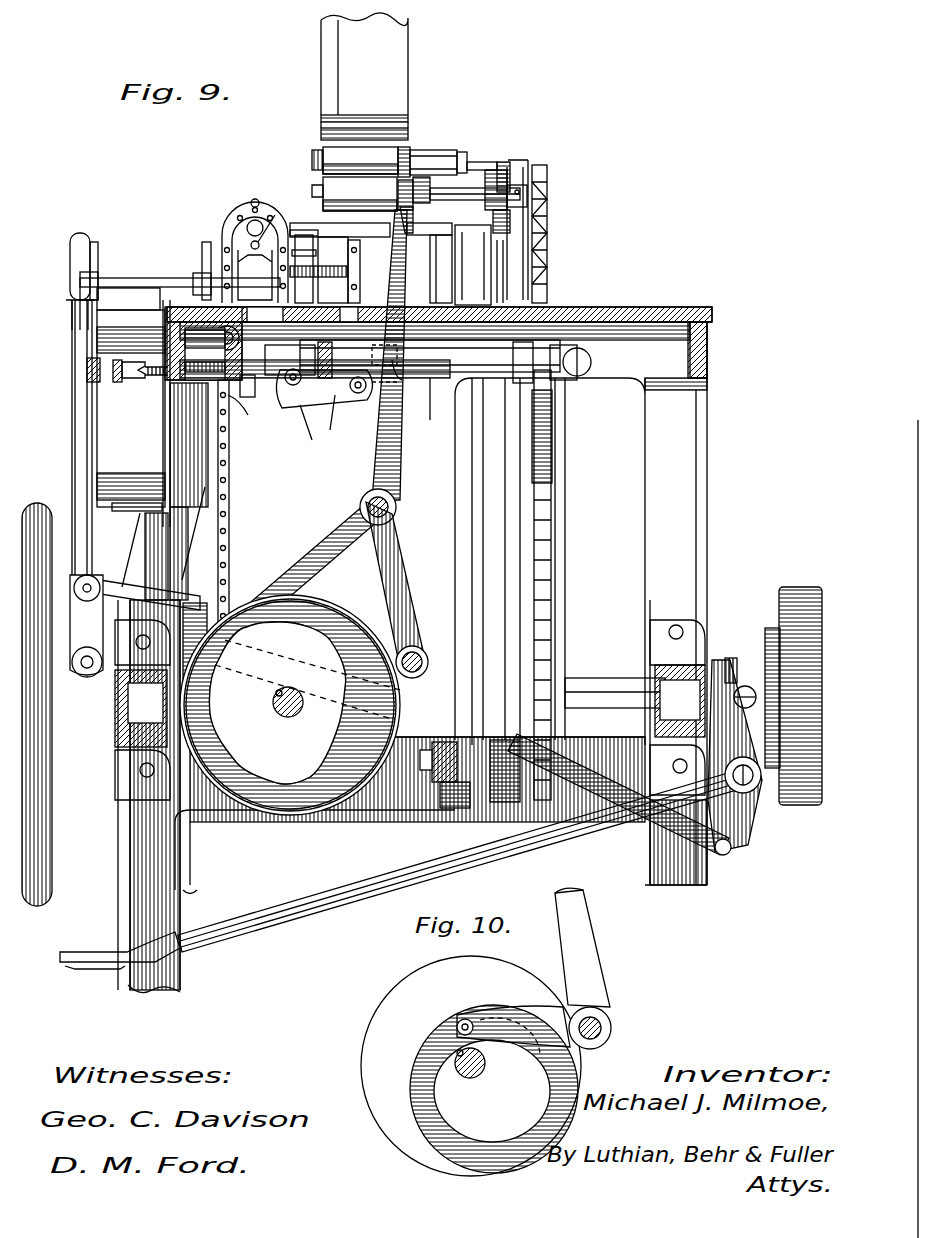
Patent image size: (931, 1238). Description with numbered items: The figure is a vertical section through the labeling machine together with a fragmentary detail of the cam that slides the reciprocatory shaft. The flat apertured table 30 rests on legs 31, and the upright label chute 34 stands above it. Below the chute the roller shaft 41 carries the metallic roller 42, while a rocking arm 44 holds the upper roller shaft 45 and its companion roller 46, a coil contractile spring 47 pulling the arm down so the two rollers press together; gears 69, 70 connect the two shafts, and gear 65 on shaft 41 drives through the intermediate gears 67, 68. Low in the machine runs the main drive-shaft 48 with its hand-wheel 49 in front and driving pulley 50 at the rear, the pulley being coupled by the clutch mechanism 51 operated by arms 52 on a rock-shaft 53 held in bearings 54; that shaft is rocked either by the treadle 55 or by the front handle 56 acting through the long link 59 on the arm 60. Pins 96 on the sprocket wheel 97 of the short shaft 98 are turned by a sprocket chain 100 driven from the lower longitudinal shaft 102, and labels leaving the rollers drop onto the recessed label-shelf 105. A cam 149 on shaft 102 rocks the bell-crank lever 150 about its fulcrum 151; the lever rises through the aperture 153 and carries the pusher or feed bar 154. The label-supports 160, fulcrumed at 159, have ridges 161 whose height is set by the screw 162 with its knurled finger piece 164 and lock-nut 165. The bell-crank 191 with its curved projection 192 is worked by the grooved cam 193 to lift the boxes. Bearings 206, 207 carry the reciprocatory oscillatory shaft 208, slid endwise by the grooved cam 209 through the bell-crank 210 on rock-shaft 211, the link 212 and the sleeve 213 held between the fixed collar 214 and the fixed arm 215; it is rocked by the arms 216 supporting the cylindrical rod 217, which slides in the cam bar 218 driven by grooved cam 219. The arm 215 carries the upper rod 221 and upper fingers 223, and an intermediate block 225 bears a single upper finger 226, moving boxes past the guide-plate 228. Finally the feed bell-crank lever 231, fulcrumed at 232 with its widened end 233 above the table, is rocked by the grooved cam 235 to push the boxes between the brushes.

In FIG. 9, the table 30 is at (613, 308).
In FIG. 9, the legs 31 is at (441, 608).
In FIG. 9, the upright chute 34 is at (364, 76).
In FIG. 9, the roller shaft 41 is at (475, 186).
In FIG. 9, the metallic roller 42 is at (354, 194).
In FIG. 9, the arm 44 is at (433, 152).
In FIG. 9, the upper roller shaft 45 is at (470, 162).
In FIG. 9, the roller 46 is at (323, 152).
In FIG. 9, the coil contractile spring 47 is at (428, 180).
In FIG. 9, the main drive-shaft 48 is at (594, 674).
In FIG. 9, the hand-wheel 49 is at (38, 503).
In FIG. 9, the driving pulley 50 is at (798, 587).
In FIG. 9, the clutch mechanism 51 is at (752, 665).
In FIG. 9, the arms 52 is at (770, 722).
In FIG. 9, the rock-shaft 53 is at (758, 788).
In FIG. 9, the bearings 54 is at (730, 658).
In FIG. 9, the treadle 55 is at (538, 840).
In FIG. 9, the handle 56 is at (80, 233).
In FIG. 9, the link 59 is at (190, 590).
In FIG. 9, the arm 60 is at (745, 815).
In FIG. 9, the gear 65 is at (500, 168).
In FIG. 9, the intermediate gear 67 is at (548, 220).
In FIG. 9, the intermediate gear 68 is at (493, 222).
In FIG. 9, the gear 69 is at (409, 233).
In FIG. 9, the gear 70 is at (406, 147).
In FIG. 9, the pins 96 is at (272, 205).
In FIG. 9, the sprocket wheel 97 is at (226, 232).
In FIG. 9, the short shaft 98 is at (252, 220).
In FIG. 9, the sprocket chain 100 is at (228, 480).
In FIG. 9, the lower longitudinal shaft 102 is at (286, 716).
In FIG. 10, the lower longitudinal shaft 102 is at (484, 1077).
In FIG. 9, the label-shelf 105 is at (452, 264).
In FIG. 9, the cam 149 is at (290, 705).
In FIG. 9, the bell-crank lever 150 is at (400, 262).
In FIG. 9, the fulcrum 151 is at (392, 507).
In FIG. 9, the aperture 153 is at (368, 300).
In FIG. 9, the pusher or feed bar 154 is at (360, 159).
In FIG. 9, the fulcrum 159 is at (193, 290).
In FIG. 9, the label-supports 160 is at (253, 410).
In FIG. 9, the ridges 161 is at (262, 318).
In FIG. 9, the screw 162 is at (186, 378).
In FIG. 9, the knurled finger pieces 164 is at (106, 384).
In FIG. 9, the lock-nuts 165 is at (131, 298).
In FIG. 9, the bell-crank 191 is at (200, 495).
In FIG. 9, the curved projection 192 is at (138, 512).
In FIG. 9, the grooved cam 193 is at (200, 805).
In FIG. 9, the bearing 206 is at (261, 391).
In FIG. 9, the bearing 207 is at (510, 348).
In FIG. 9, the reciprocatory oscillatory shaft 208 is at (424, 372).
In FIG. 10, the grooved cam 209 is at (378, 1013).
In FIG. 9, the bell-crank 210 is at (402, 547).
In FIG. 10, the bell-crank 210 is at (590, 927).
In FIG. 9, the rock-shaft 211 is at (426, 598).
In FIG. 10, the rock-shaft 211 is at (611, 1032).
In FIG. 9, the link 212 is at (324, 388).
In FIG. 9, the sleeve 213 is at (298, 360).
In FIG. 9, the fixed collar 214 is at (298, 422).
In FIG. 9, the fixed arm 215 is at (435, 334).
In FIG. 9, the arms 216 is at (600, 394).
In FIG. 9, the cylindrical rod 217 is at (446, 372).
In FIG. 9, the cam bar 218 is at (525, 420).
In FIG. 9, the grooved cam 219 is at (500, 586).
In FIG. 9, the upper rod 221 is at (152, 280).
In FIG. 9, the upper fingers 223 is at (98, 262).
In FIG. 9, the intermediate block 225 is at (302, 230).
In FIG. 9, the upper finger 226 is at (210, 262).
In FIG. 9, the guide-plate 228 is at (442, 282).
In FIG. 9, the feed bell-crank lever 231 is at (480, 504).
In FIG. 9, the fulcrum 232 is at (432, 768).
In FIG. 9, the widened end 233 is at (479, 271).
In FIG. 9, the grooved cam 235 is at (440, 820).